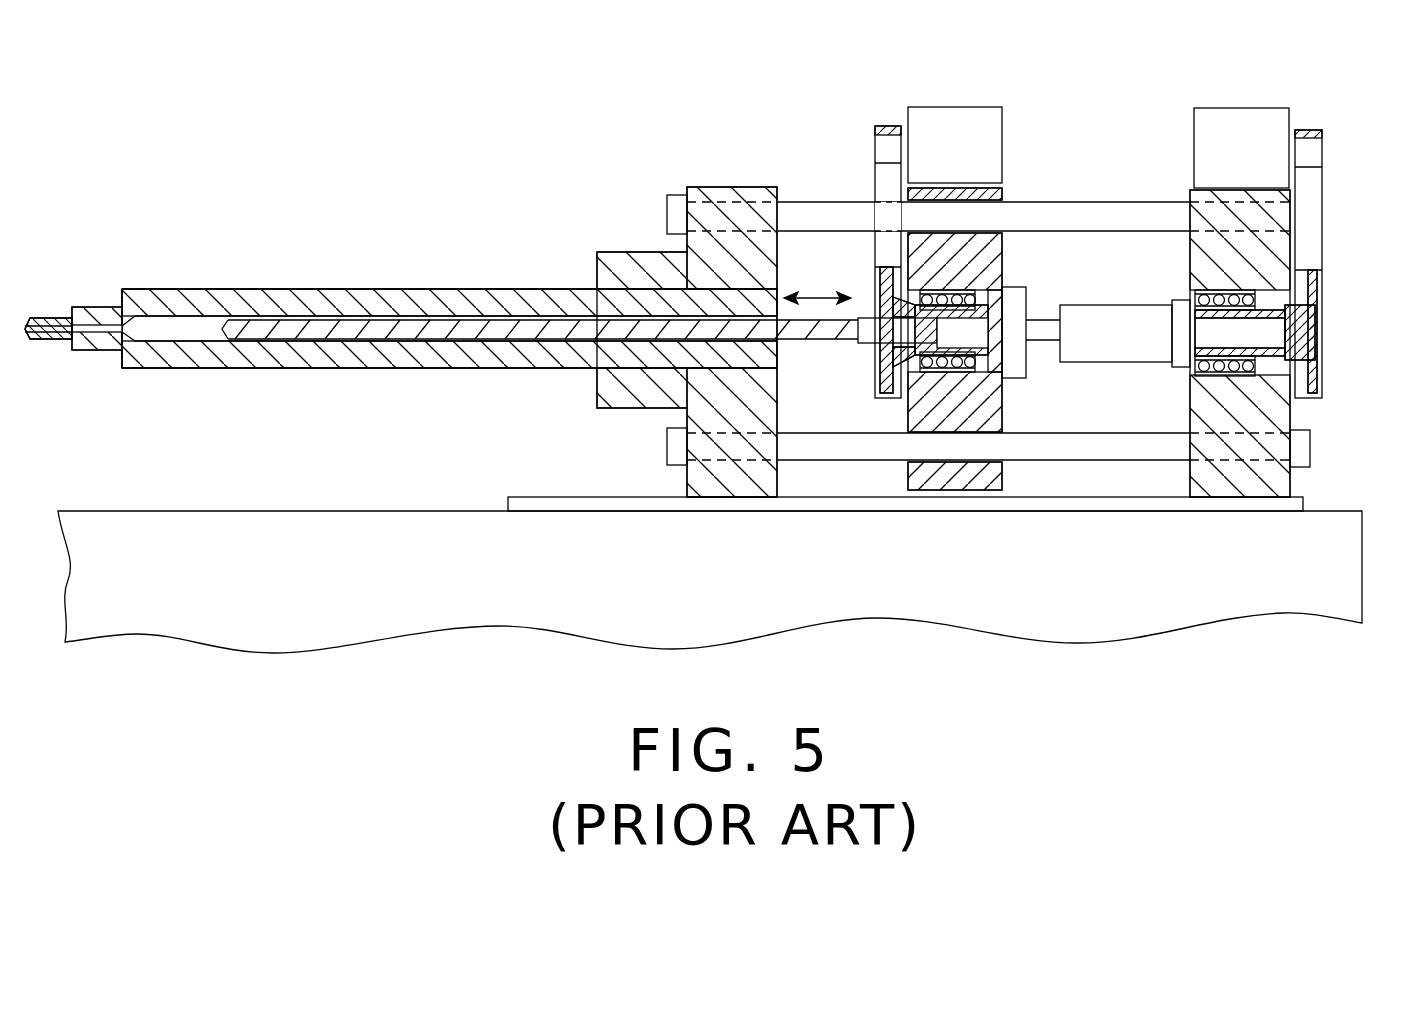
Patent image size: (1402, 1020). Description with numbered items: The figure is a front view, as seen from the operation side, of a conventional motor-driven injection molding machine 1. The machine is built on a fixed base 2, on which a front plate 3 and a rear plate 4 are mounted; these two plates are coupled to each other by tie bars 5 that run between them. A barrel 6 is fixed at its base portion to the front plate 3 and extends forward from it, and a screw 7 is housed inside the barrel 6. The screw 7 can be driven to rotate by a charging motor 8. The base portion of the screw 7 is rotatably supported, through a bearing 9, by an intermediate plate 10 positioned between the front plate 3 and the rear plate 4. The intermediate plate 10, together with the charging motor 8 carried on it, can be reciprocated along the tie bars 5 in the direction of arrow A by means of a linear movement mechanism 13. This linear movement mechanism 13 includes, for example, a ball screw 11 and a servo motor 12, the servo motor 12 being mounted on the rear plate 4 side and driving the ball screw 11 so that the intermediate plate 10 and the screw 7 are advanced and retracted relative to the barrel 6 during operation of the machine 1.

The injection molding machine 1 is at (602, 165).
The fixed base 2 is at (250, 510).
The front plate 3 is at (722, 190).
The rear plate 4 is at (1272, 268).
The tie bars 5 is at (1092, 218).
The barrel 6 is at (190, 300).
The screw 7 is at (340, 330).
The charging motor 8 is at (946, 130).
The bearing 9 is at (958, 372).
The intermediate plate 10 is at (975, 262).
The ball screw 11 is at (1106, 363).
The servo motor 12 is at (1237, 135).
The linear movement mechanism 13 is at (1106, 302).